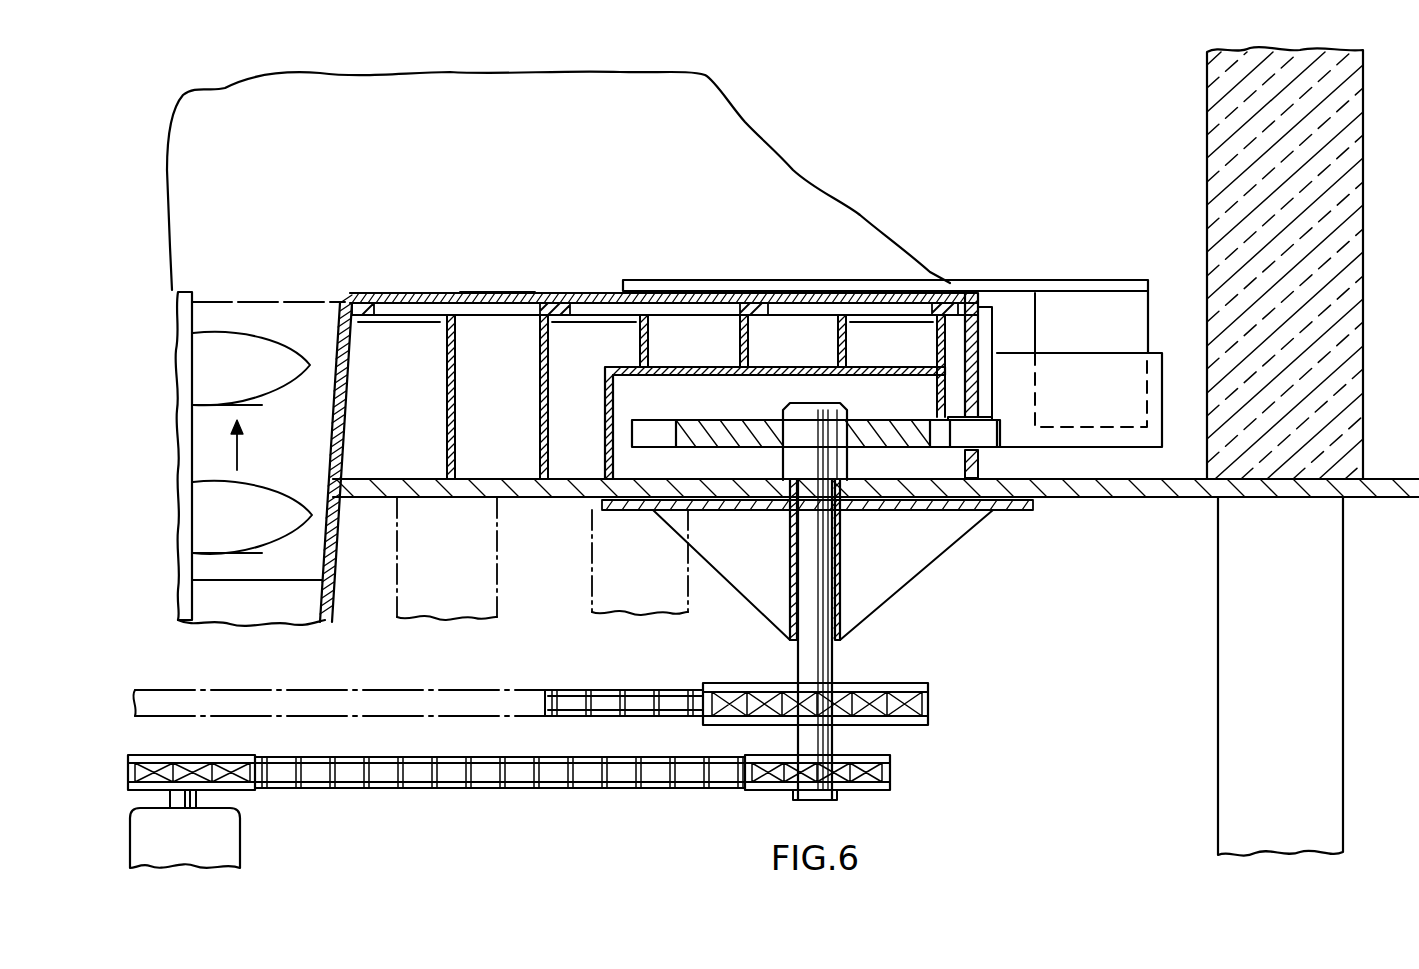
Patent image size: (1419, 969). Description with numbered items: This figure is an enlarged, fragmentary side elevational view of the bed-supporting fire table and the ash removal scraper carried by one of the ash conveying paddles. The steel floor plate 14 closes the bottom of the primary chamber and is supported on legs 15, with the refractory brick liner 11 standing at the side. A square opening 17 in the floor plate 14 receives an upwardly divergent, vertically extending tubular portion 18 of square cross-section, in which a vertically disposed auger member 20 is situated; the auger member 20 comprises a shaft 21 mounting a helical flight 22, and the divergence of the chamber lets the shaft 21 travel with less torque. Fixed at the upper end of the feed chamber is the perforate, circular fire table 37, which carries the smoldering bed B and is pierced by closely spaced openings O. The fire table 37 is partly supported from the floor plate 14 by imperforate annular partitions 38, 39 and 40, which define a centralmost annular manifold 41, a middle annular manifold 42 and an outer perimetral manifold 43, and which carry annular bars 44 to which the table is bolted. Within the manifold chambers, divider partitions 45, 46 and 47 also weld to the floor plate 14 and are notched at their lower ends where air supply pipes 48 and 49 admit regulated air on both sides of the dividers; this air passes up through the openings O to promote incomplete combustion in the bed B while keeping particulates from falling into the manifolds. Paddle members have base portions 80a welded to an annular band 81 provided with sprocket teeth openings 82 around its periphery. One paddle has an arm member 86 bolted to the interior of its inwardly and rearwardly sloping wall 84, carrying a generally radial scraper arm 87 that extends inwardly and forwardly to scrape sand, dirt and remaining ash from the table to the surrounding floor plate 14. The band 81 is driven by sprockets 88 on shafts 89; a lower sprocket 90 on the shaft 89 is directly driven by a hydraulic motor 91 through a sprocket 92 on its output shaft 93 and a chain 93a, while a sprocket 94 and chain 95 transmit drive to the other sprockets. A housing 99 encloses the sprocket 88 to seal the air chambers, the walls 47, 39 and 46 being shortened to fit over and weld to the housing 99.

The bed B is at (772, 131).
The openings O is at (531, 293).
The liner 11 is at (1207, 156).
The floor plate 14 is at (1170, 478).
The legs 15 is at (1240, 582).
The square opening 17 is at (320, 308).
The tubular portion 18 is at (347, 433).
The auger member 20 is at (263, 333).
The shaft 21 is at (195, 313).
The helical flight 22 is at (272, 400).
The fire table 37 is at (807, 290).
The annular partition 38 is at (940, 329).
The annular partition 39 is at (738, 329).
The annular partition 40 is at (548, 343).
The centralmost annular manifold 41 is at (875, 330).
The middle annular manifold 42 is at (620, 332).
The outer perimetral manifold 43 is at (417, 338).
The annular bars 44 is at (946, 305).
The divider partition 45 is at (455, 396).
The divider partition 46 is at (652, 352).
The divider partition 47 is at (848, 352).
The air supply pipe 48 is at (395, 588).
The air supply pipe 49 is at (590, 580).
The base portion 80a is at (988, 340).
The annular band 81 is at (968, 300).
The sprocket teeth openings 82 is at (968, 460).
The sloping wall 84 is at (1153, 402).
The arm member 86 is at (1130, 334).
The scraper arm 87 is at (1035, 292).
The sprocket 88 is at (900, 418).
The shaft 89 is at (820, 548).
The lower sprocket 90 is at (760, 792).
The hydraulic motor 91 is at (245, 836).
The sprocket 92 is at (228, 755).
The output shaft 93 is at (200, 800).
The chain 93a is at (430, 758).
The sprocket 94 is at (740, 685).
The chain 95 is at (660, 688).
The housing 99 is at (764, 375).